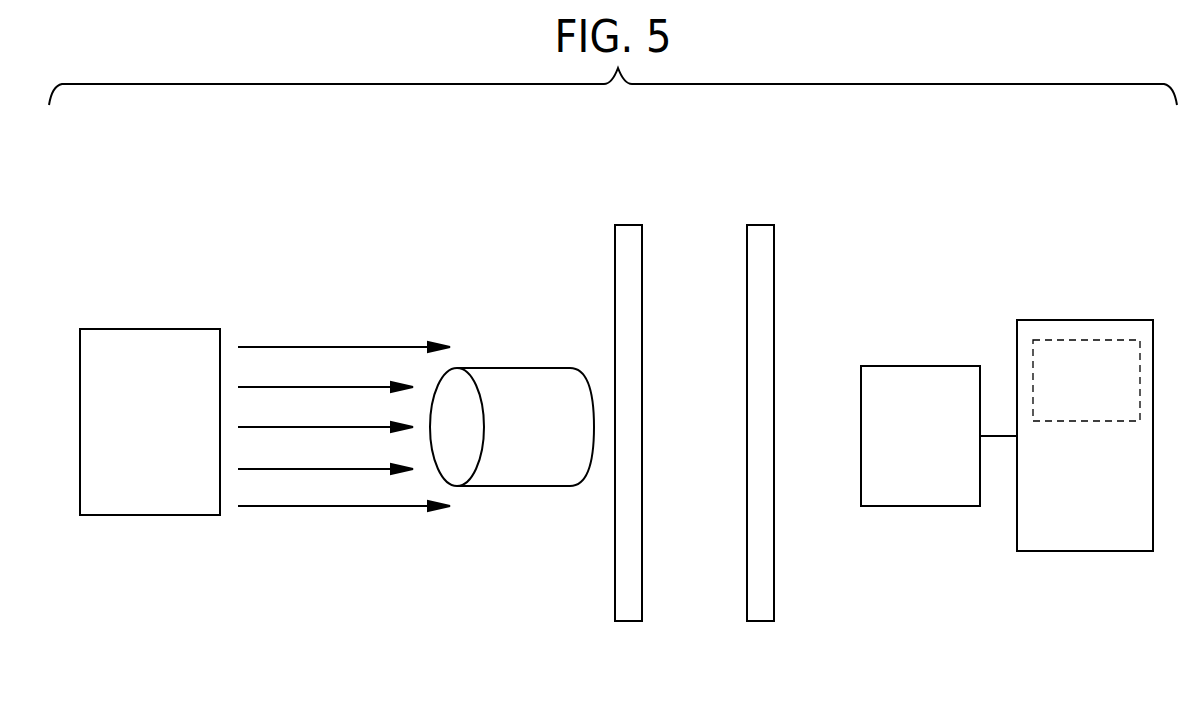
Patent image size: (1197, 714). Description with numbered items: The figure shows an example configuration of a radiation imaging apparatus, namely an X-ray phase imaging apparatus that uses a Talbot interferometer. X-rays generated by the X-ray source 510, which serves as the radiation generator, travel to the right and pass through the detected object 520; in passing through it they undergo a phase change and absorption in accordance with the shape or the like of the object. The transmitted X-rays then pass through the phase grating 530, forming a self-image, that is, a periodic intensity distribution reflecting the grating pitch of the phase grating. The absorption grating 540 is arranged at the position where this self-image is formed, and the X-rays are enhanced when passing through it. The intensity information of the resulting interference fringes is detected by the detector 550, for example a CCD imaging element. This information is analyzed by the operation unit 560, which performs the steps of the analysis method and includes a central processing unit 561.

The X-ray source 510 is at (157, 337).
The detected object 520 is at (527, 377).
The phase grating 530 is at (631, 237).
The absorption grating 540 is at (764, 237).
The detector 550 is at (930, 371).
The operation unit 560 is at (1057, 328).
The central processing unit (CPU) 561 is at (1128, 340).